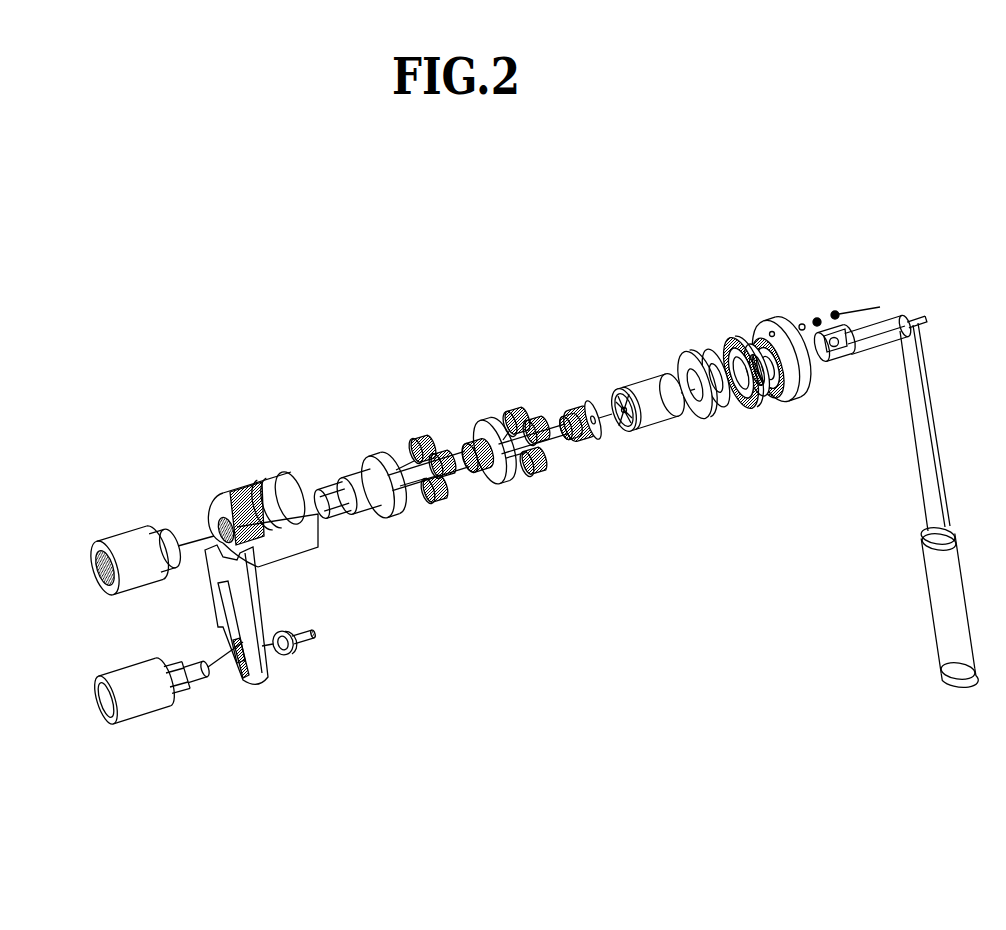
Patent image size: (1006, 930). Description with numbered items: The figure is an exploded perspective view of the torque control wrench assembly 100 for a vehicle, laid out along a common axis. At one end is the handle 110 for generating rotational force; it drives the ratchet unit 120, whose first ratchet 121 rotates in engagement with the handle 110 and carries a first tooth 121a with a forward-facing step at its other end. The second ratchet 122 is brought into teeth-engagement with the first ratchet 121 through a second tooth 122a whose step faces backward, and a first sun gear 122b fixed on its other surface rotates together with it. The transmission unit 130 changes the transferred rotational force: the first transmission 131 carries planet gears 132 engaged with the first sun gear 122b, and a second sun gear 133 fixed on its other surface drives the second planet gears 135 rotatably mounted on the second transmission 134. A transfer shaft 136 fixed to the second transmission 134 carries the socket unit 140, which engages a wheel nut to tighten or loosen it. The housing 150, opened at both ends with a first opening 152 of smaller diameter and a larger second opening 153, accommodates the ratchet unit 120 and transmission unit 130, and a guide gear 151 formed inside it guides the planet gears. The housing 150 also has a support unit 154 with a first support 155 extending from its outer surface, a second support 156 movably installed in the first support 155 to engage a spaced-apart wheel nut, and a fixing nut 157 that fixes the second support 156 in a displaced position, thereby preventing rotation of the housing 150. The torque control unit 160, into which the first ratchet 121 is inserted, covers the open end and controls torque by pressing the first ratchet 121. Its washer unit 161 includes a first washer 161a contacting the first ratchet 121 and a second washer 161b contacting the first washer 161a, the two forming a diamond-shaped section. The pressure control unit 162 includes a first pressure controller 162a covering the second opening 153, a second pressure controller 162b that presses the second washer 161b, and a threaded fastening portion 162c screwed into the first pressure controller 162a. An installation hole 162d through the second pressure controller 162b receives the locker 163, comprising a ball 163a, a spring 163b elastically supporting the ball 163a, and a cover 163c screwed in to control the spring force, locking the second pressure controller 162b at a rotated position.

The torque control wrench assembly 100 is at (476, 195).
The handle 110 is at (928, 470).
The ratchet unit 120 is at (626, 465).
The first ratchet 121 is at (651, 450).
The first tooth 121a is at (660, 412).
The second ratchet 122 is at (598, 464).
The second tooth 122a is at (590, 438).
The first sun gear 122b is at (577, 438).
The transmission unit 130 is at (439, 500).
The first transmission 131 is at (496, 474).
The planet gears 132 is at (524, 469).
The second sun gear 133 is at (478, 470).
The second transmission 134 is at (391, 510).
The second planet gears 135 is at (437, 492).
The transfer shaft 136 is at (361, 500).
The socket unit 140 is at (120, 548).
The housing 150 is at (204, 618).
The guide gear 151 is at (270, 502).
The first opening 152 is at (213, 538).
The second opening 153 is at (283, 503).
The support unit 154 is at (203, 670).
The first support 155 is at (253, 693).
The second support 156 is at (143, 703).
The fixing nut 157 is at (290, 662).
The torque control unit 160 is at (749, 318).
The washer unit 161 is at (653, 333).
The first washer 161a is at (688, 360).
The second washer 161b is at (712, 355).
The pressure control unit 162 is at (734, 327).
The first pressure controller 162a is at (783, 275).
The second pressure controller 162b is at (772, 340).
The fastening portion 162c is at (762, 345).
The installation hole 162d is at (784, 334).
The locker 163 is at (860, 302).
The ball 163a is at (804, 325).
The spring 163b is at (819, 318).
The cover 163c is at (818, 270).